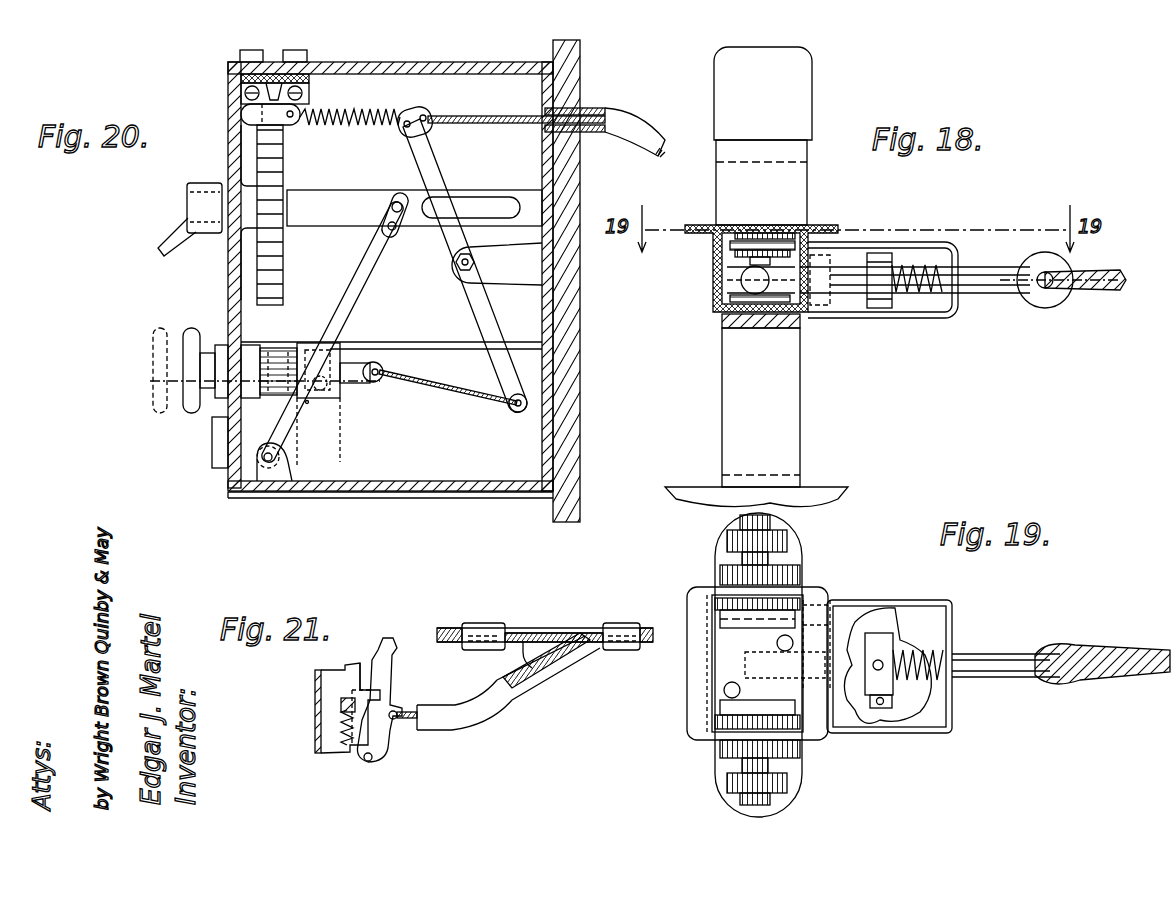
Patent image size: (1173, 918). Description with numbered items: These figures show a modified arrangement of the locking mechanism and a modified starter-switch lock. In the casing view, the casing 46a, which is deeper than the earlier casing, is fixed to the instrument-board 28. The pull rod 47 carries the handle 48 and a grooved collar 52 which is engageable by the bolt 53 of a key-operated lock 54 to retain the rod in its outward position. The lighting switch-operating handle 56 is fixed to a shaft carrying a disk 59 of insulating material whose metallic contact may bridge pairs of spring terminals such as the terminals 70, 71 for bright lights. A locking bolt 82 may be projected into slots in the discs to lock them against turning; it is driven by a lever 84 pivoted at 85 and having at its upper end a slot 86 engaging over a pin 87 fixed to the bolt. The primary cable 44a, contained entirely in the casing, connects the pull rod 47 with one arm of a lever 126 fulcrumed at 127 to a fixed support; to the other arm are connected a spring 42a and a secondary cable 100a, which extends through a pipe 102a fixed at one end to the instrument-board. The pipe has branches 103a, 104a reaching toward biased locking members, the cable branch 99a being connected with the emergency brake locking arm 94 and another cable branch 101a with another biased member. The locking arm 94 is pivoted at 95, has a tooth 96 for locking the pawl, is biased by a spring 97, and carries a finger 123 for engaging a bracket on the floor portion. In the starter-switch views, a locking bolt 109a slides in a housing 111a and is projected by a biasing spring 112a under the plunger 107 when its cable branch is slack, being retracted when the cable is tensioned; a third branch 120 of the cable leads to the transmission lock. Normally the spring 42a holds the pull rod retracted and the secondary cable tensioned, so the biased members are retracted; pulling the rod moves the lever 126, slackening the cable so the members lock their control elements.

In FIG. 20, the instrument-board 28 is at (576, 418).
In FIG. 20, the spring 42a is at (376, 103).
In FIG. 20, the primary cable 44a is at (440, 410).
In FIG. 20, the casing 46a is at (238, 288).
In FIG. 20, the pull rod 47 is at (355, 386).
In FIG. 20, the handle 48 is at (152, 378).
In FIG. 20, the grooved collar 52 is at (338, 402).
In FIG. 20, the bolt 53 is at (318, 420).
In FIG. 20, the lock 54 is at (250, 425).
In FIG. 20, the lighting switch-operating handle 56 is at (162, 262).
In FIG. 20, the disk 59 is at (270, 185).
In FIG. 20, the terminal 70 is at (241, 93).
In FIG. 20, the terminal 71 is at (303, 93).
In FIG. 20, the locking bolt 82 is at (368, 198).
In FIG. 20, the lever 84 is at (343, 332).
In FIG. 20, the pivot 85 is at (270, 462).
In FIG. 20, the slot 86 is at (395, 228).
In FIG. 20, the pin 87 is at (396, 200).
In FIG. 21, the locking arm 94 is at (372, 740).
In FIG. 21, the pivot 95 is at (372, 762).
In FIG. 21, the tooth 96 is at (361, 695).
In FIG. 21, the spring 97 is at (345, 738).
In FIG. 21, the secondary cable branch 99a is at (412, 710).
In FIG. 20, the secondary cable 100a is at (490, 115).
In FIG. 21, the secondary cable 100a is at (650, 634).
In FIG. 21, the secondary cable branch 101a is at (447, 626).
In FIG. 20, the pipe 102a is at (637, 120).
In FIG. 21, the pipe 102a is at (622, 650).
In FIG. 21, the pipe branch 103a is at (477, 707).
In FIG. 21, the pipe branch 104a is at (490, 632).
In FIG. 18, the plunger 107 is at (735, 248).
In FIG. 18, the locking bolt 109a is at (848, 293).
In FIG. 19, the locking bolt 109a is at (982, 678).
In FIG. 18, the housing 111a is at (915, 318).
In FIG. 19, the housing 111a is at (940, 730).
In FIG. 18, the biasing spring 112a is at (932, 288).
In FIG. 18, the third branch 120 is at (1085, 292).
In FIG. 19, the third branch 120 is at (1095, 682).
In FIG. 21, the finger 123 is at (390, 640).
In FIG. 20, the lever 126 is at (475, 300).
In FIG. 20, the fulcrum 127 is at (458, 268).